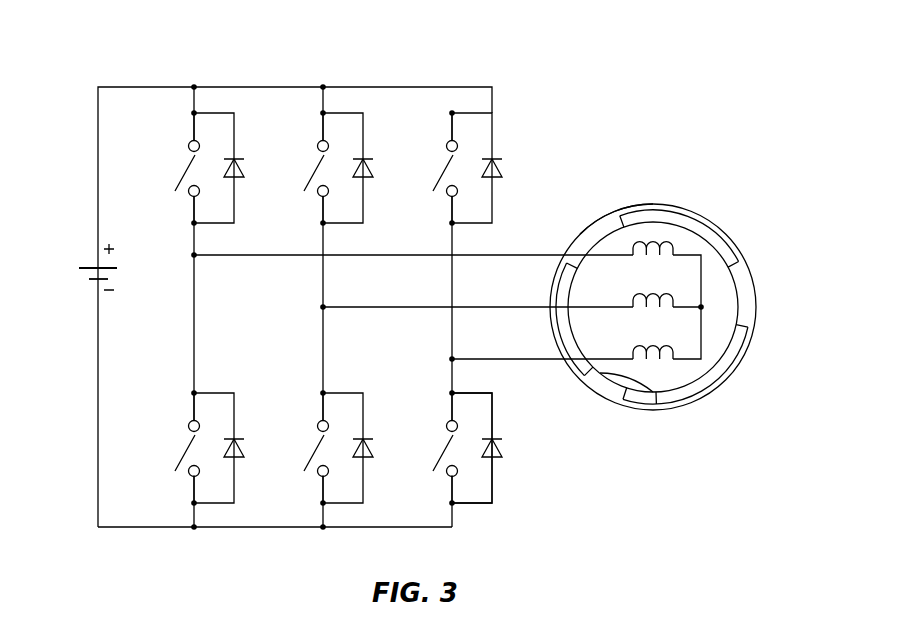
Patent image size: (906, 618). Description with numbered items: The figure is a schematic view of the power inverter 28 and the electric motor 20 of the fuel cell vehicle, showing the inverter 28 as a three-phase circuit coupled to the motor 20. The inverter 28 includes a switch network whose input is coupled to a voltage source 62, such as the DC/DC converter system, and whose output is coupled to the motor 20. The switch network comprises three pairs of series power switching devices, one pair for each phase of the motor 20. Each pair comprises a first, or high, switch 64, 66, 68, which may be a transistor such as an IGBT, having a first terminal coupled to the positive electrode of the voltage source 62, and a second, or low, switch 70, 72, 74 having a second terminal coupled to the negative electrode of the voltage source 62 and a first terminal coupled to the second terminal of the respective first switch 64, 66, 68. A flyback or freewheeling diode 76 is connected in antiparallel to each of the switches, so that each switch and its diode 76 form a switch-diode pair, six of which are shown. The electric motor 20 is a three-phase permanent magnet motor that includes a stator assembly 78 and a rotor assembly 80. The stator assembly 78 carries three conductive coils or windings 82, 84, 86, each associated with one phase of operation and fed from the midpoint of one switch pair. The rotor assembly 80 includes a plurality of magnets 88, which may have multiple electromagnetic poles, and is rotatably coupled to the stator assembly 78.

The electric motor/generator 20 is at (707, 152).
The DC/AC power inverter 28 is at (540, 80).
The voltage source 62 is at (93, 280).
The first switch 64 is at (190, 164).
The first switch 66 is at (319, 164).
The first switch 68 is at (448, 164).
The second switch 70 is at (191, 443).
The second switch 72 is at (320, 443).
The second switch 74 is at (449, 443).
The diode 76 is at (387, 341).
The stator assembly 78 is at (608, 212).
The rotor assembly 80 is at (627, 399).
The winding 82 is at (645, 258).
The winding 84 is at (645, 310).
The winding 86 is at (662, 362).
The magnets 88 is at (690, 218).